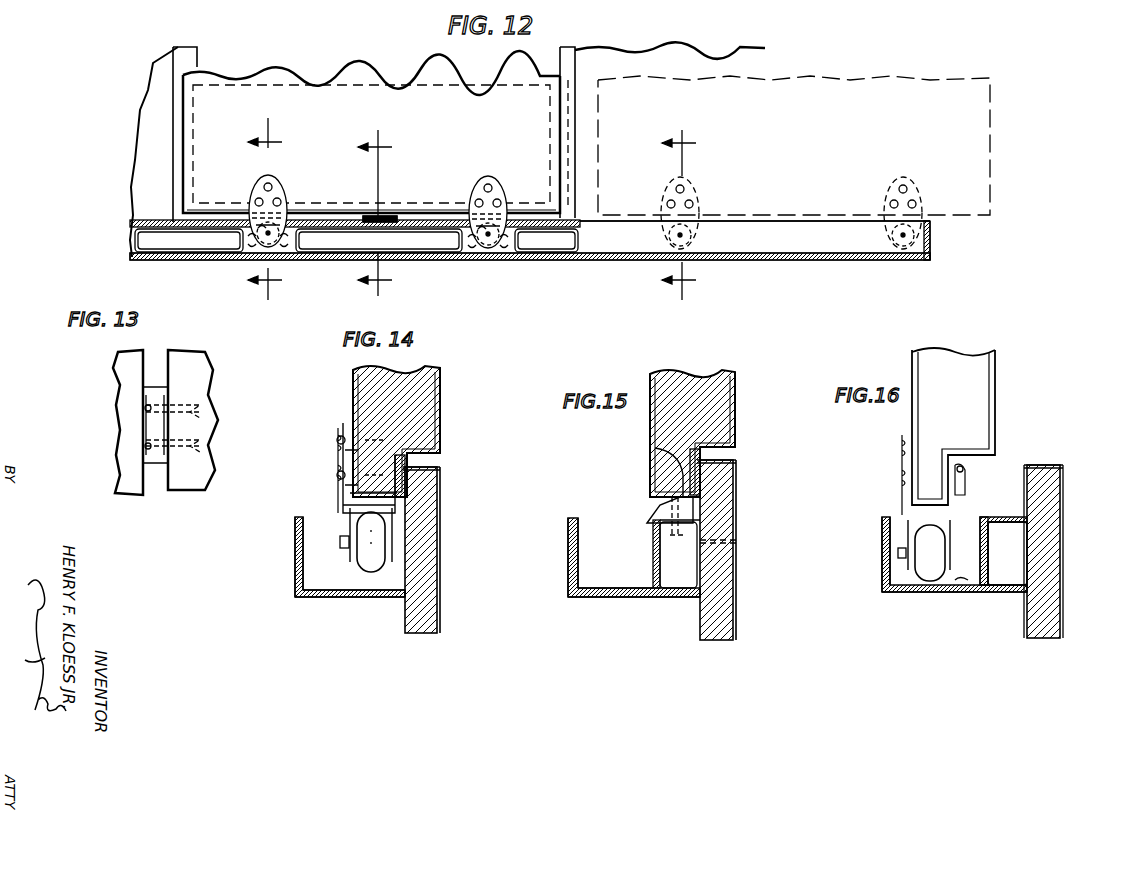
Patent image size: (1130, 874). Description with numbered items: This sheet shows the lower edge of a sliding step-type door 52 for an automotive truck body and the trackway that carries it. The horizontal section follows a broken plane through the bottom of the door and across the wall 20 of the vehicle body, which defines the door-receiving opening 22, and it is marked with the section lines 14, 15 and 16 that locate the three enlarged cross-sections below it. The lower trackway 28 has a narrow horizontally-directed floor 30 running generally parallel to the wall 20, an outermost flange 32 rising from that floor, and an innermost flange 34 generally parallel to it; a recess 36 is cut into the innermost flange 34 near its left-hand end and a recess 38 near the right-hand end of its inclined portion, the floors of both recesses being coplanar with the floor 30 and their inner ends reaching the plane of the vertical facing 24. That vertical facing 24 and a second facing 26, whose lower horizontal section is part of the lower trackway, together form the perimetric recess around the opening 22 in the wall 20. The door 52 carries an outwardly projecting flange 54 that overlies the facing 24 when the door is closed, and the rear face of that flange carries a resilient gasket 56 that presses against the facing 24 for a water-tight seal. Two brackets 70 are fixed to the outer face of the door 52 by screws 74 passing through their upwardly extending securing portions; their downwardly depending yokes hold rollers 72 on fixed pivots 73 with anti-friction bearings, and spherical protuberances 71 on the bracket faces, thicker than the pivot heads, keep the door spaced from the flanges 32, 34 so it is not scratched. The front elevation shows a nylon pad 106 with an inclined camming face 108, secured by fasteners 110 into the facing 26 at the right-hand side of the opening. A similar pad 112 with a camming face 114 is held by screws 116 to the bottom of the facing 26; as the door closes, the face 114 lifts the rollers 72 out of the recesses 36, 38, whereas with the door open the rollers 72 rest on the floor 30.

In FIG. 12, the section line 14— 14 is at (265, 210).
In FIG. 12, the section line 15— 15 is at (375, 209).
In FIG. 12, the section line 16— 16 is at (679, 213).
In FIG. 14, the wall 20 is at (405, 635).
In FIG. 15, the wall 20 is at (700, 628).
In FIG. 16, the wall 20 is at (1024, 618).
In FIG. 12, the door-receiving opening 22 is at (197, 62).
In FIG. 14, the door-receiving opening 22 is at (442, 458).
In FIG. 15, the door-receiving opening 22 is at (738, 452).
In FIG. 16, the door-receiving opening 22 is at (1052, 465).
In FIG. 14, the vertical facing 24 is at (442, 490).
In FIG. 15, the vertical facing 24 is at (738, 500).
In FIG. 16, the vertical facing 24 is at (1026, 493).
In FIG. 13, the second facing 26 is at (163, 360).
In FIG. 14, the second facing 26 is at (320, 483).
In FIG. 15, the second facing 26 is at (668, 520).
In FIG. 16, the second facing 26 is at (1000, 512).
In FIG. 12, the lower trackway 28 is at (530, 258).
In FIG. 14, the lower trackway 28 is at (350, 575).
In FIG. 15, the lower trackway 28 is at (634, 578).
In FIG. 16, the lower trackway 28 is at (954, 571).
In FIG. 12, the floor 30 is at (290, 260).
In FIG. 14, the floor 30 is at (318, 585).
In FIG. 15, the floor 30 is at (610, 588).
In FIG. 16, the floor 30 is at (893, 600).
In FIG. 12, the outermost flange 32 is at (605, 256).
In FIG. 14, the outermost flange 32 is at (295, 557).
In FIG. 15, the outermost flange 32 is at (568, 560).
In FIG. 16, the outermost flange 32 is at (882, 562).
In FIG. 15, the innermost flange 34 is at (648, 570).
In FIG. 16, the innermost flange 34 is at (984, 586).
In FIG. 12, the recess 36 is at (240, 258).
In FIG. 14, the recess 36 is at (383, 619).
In FIG. 12, the recess 38 is at (512, 242).
In FIG. 16, the recess 38 is at (962, 600).
In FIG. 13, the door 52 is at (128, 412).
In FIG. 12, the outwardly projecting flange 54 is at (185, 155).
In FIG. 14, the outwardly projecting flange 54 is at (343, 492).
In FIG. 15, the outwardly projecting flange 54 is at (656, 458).
In FIG. 16, the outwardly projecting flange 54 is at (915, 478).
In FIG. 14, the resilient gasket 56 is at (403, 468).
In FIG. 15, the resilient gasket 56 is at (696, 450).
In FIG. 16, the resilient gasket 56 is at (968, 480).
In FIG. 12, the bracket 70 is at (283, 188).
In FIG. 14, the bracket 70 is at (348, 440).
In FIG. 16, the bracket 70 is at (902, 438).
In FIG. 12, the spherical protuberance 71 is at (285, 212).
In FIG. 12, the roller 72 is at (265, 243).
In FIG. 14, the roller 72 is at (370, 572).
In FIG. 16, the roller 72 is at (925, 548).
In FIG. 12, the fixed pivot 73 is at (262, 234).
In FIG. 14, the fixed pivot 73 is at (340, 540).
In FIG. 16, the fixed pivot 73 is at (898, 552).
In FIG. 12, the screw 74 is at (256, 200).
In FIG. 14, the screw 74 is at (338, 470).
In FIG. 13, the pad 106 is at (163, 470).
In FIG. 13, the inclined camming face 108 is at (158, 425).
In FIG. 13, the fastener 110 is at (212, 430).
In FIG. 12, the pad 112 is at (380, 222).
In FIG. 15, the pad 112 is at (650, 515).
In FIG. 12, the inclined camming face 114 is at (380, 216).
In FIG. 15, the inclined camming face 114 is at (663, 497).
In FIG. 15, the screw 116 is at (738, 543).